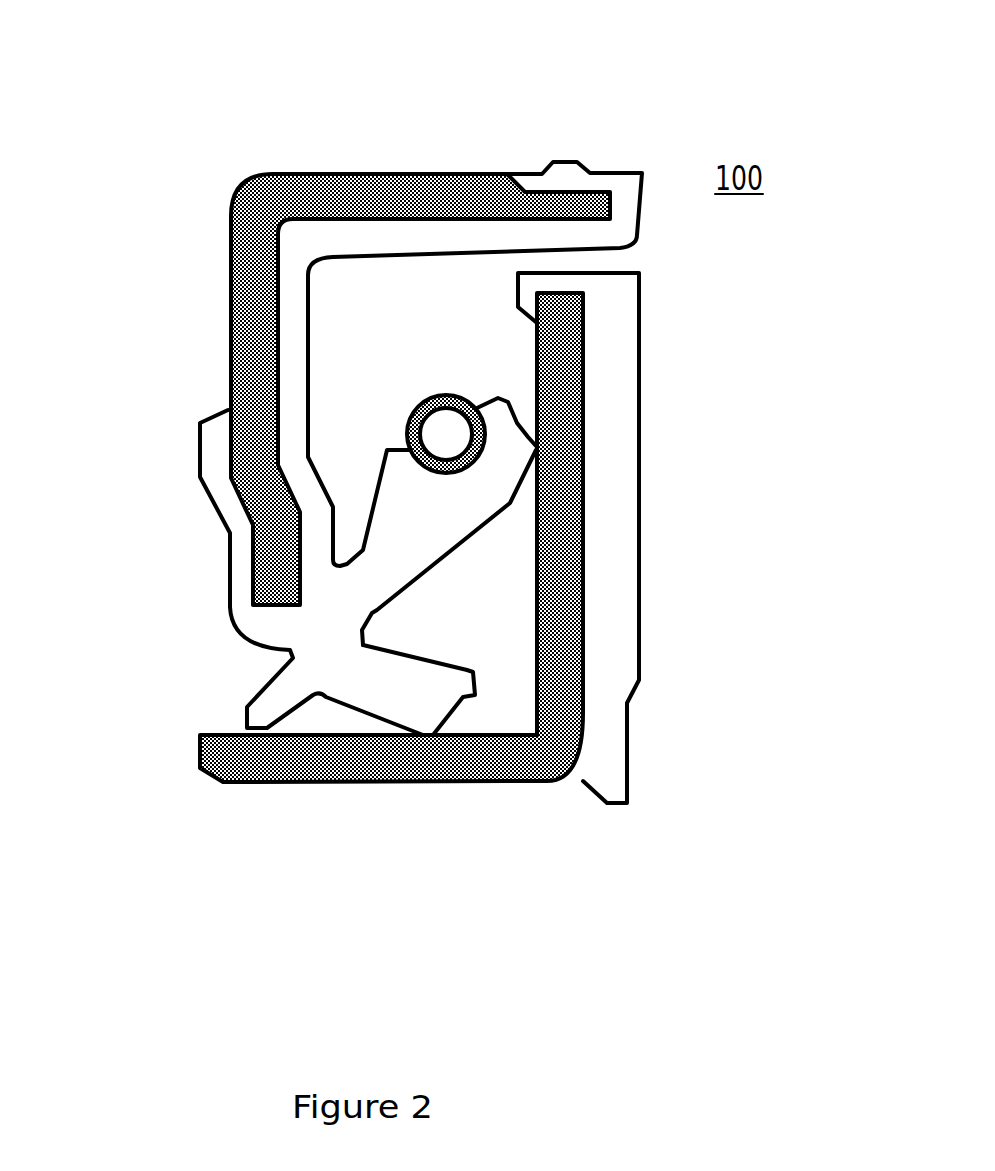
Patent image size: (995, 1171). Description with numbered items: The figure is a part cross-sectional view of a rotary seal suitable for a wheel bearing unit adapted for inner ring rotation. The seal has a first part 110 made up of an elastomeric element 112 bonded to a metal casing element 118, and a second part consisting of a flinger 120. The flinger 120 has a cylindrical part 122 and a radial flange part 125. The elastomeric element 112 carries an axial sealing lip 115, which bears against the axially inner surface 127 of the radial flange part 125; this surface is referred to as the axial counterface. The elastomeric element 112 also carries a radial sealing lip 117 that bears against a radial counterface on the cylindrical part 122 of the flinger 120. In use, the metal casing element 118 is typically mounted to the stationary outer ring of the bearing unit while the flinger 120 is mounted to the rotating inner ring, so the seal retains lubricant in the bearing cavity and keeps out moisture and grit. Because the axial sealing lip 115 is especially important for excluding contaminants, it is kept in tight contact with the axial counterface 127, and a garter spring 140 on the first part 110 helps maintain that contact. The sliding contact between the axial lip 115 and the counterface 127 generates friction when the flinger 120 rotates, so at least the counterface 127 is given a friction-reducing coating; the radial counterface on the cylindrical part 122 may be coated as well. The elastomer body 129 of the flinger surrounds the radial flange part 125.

The first part 110 is at (224, 159).
The elastomeric element 112 is at (335, 602).
The axial sealing lip 115 is at (520, 450).
The radial sealing lip 117 is at (427, 703).
The metal casing element 118 is at (253, 310).
The flinger 120 is at (565, 838).
The cylindrical part 122 is at (450, 760).
The radial flange part 125 is at (555, 615).
The axially inner surface 127 is at (541, 476).
The elastomer body 129 is at (610, 550).
The garter spring 140 is at (443, 430).